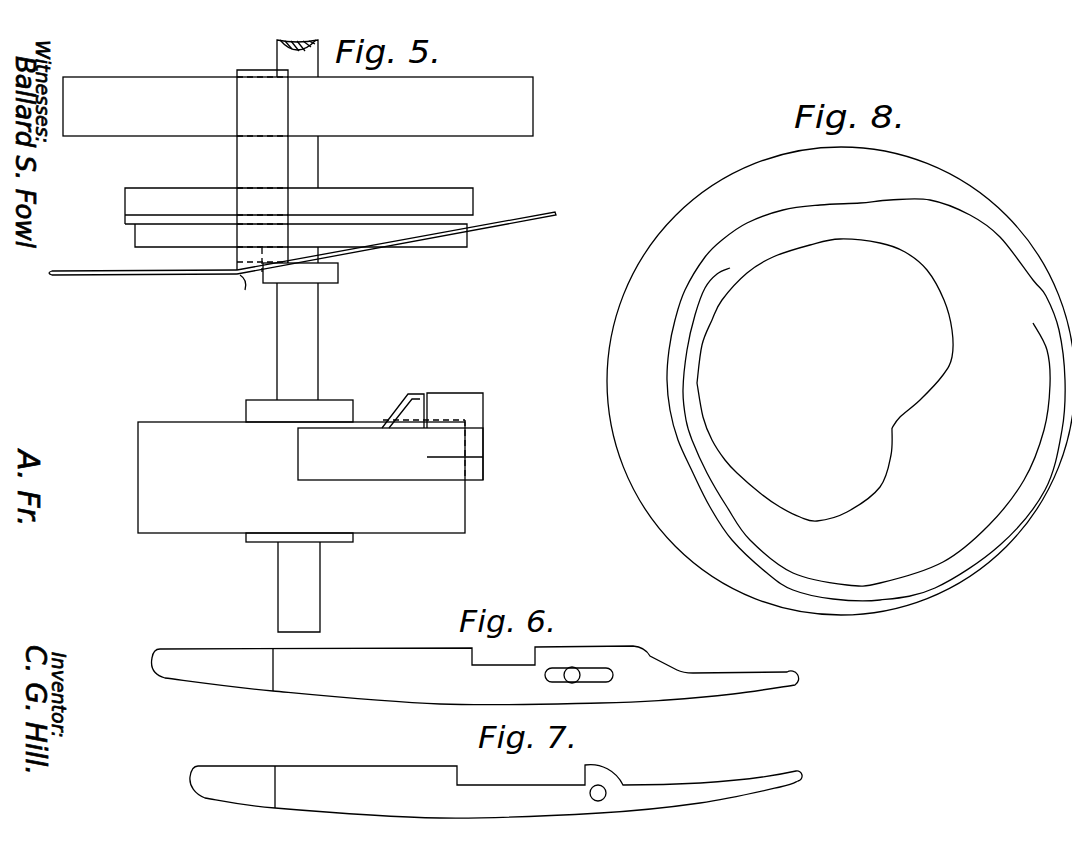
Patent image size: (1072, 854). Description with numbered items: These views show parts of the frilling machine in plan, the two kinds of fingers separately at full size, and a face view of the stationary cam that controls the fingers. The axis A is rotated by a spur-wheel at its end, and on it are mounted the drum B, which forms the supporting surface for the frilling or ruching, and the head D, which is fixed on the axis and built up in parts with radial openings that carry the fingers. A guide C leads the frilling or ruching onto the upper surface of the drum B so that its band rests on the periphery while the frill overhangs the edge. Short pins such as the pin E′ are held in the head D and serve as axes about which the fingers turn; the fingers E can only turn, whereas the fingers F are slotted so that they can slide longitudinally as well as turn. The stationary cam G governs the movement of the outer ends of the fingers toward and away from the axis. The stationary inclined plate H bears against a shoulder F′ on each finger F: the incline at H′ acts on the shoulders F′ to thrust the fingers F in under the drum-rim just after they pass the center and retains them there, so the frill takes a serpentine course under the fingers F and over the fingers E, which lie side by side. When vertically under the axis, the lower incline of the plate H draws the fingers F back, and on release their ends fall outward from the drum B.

In FIG. 5, the axis A is at (297, 58).
In FIG. 5, the drum B is at (310, 471).
In FIG. 5, the guide C is at (432, 436).
In FIG. 5, the head D is at (299, 217).
In FIG. 5, the stationary cam G is at (298, 106).
In FIG. 5, the stationary inclined plate H is at (311, 239).
In FIG. 5, the incline H′ is at (246, 292).
In FIG. 6, the finger F is at (475, 675).
In FIG. 6, the shoulder F′ is at (474, 652).
In FIG. 6, the finger E is at (576, 667).
In FIG. 7, the finger E is at (496, 792).
In FIG. 7, the pin E′ is at (603, 786).